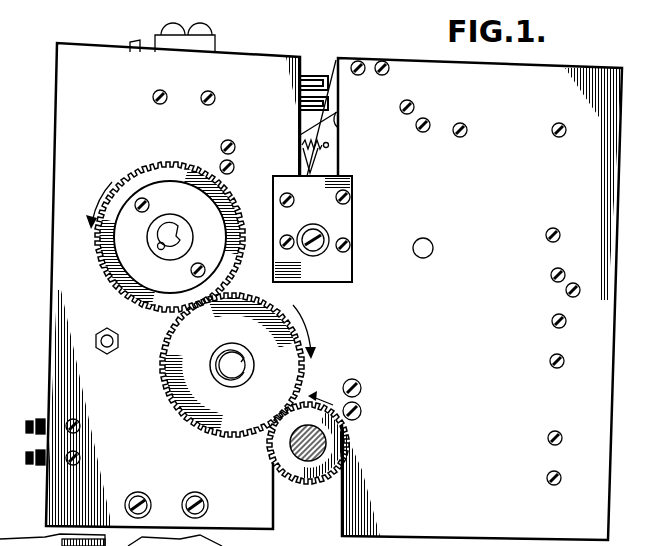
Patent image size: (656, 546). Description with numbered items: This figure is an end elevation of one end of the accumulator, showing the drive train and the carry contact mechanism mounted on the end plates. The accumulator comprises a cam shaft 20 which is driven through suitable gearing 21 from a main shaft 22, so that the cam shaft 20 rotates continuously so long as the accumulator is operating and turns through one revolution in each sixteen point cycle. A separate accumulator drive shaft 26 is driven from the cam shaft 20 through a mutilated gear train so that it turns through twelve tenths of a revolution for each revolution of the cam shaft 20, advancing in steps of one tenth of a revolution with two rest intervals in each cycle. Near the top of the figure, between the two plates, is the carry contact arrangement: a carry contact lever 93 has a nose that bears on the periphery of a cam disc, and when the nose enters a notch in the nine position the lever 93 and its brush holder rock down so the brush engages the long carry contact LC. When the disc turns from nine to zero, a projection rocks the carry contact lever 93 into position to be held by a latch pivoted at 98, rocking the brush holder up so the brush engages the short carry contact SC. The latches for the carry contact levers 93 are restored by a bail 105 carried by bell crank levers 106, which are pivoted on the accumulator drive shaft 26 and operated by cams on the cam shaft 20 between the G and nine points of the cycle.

The cam shaft 20 is at (178, 232).
The gearing 21 is at (336, 445).
The main shaft 22 is at (311, 459).
The accumulator drive shaft 26 is at (313, 252).
The carry contact lever 93 is at (305, 136).
The pivot of latch 98 is at (307, 92).
The bail 105 is at (338, 130).
The bell crank levers 106 is at (322, 159).
The short carry contact SC is at (330, 88).
The long carry contact LC is at (330, 100).